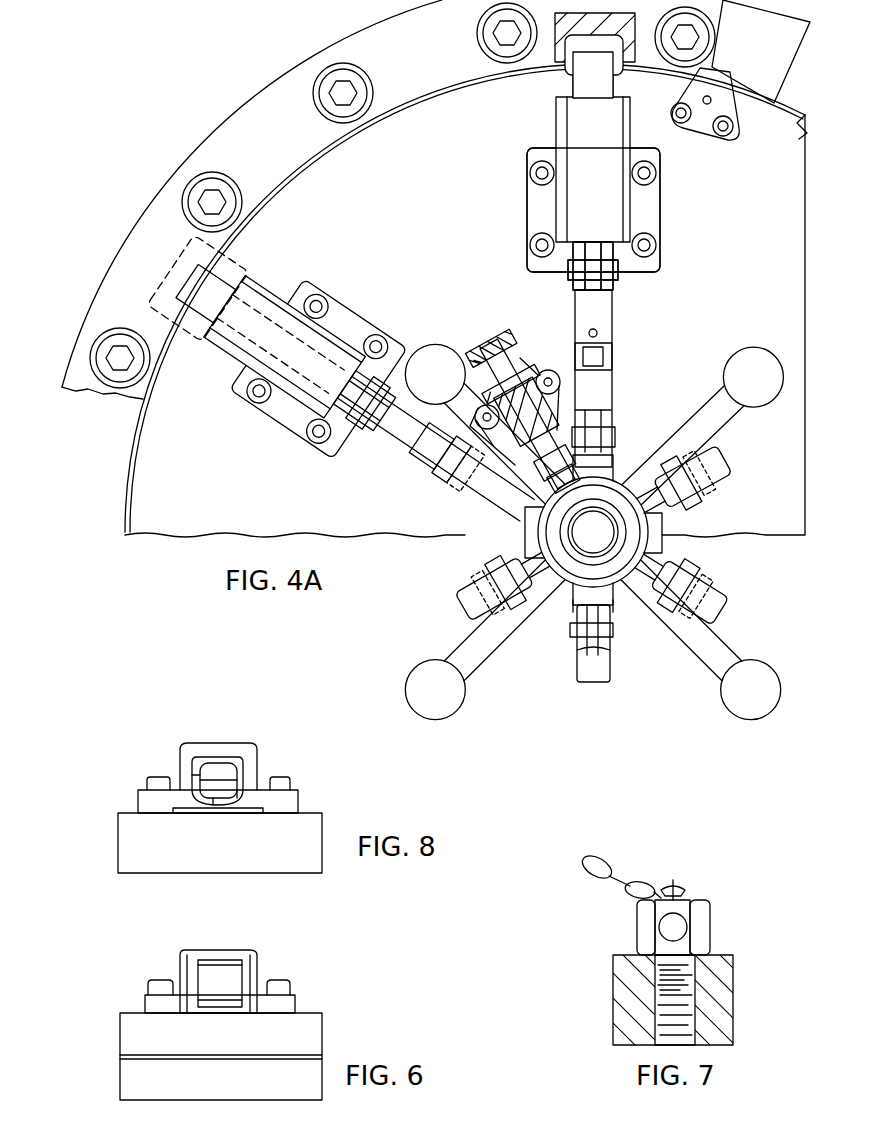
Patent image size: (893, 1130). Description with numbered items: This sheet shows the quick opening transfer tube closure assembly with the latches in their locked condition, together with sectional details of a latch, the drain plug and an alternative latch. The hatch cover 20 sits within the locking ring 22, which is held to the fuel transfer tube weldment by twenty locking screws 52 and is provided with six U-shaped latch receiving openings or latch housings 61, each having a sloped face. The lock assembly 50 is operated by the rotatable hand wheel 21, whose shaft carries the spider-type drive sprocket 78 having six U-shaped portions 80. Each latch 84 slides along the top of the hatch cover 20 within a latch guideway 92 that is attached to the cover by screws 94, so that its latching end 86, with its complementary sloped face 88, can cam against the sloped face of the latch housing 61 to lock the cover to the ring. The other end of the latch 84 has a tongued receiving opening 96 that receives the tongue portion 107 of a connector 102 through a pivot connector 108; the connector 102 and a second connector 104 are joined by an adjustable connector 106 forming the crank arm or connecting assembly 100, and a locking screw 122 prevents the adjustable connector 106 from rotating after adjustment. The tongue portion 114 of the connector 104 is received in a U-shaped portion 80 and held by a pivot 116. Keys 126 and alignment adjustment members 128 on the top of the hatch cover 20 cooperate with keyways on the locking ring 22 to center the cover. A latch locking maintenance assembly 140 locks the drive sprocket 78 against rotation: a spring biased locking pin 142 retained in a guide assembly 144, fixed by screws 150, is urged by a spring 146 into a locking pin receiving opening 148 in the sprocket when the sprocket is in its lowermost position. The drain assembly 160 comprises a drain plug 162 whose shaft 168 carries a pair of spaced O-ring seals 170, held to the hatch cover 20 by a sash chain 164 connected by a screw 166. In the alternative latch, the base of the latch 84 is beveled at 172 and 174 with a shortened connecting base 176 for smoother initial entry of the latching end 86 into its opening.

In FIG. 4A, the hatch cover 20 is at (799, 132).
In FIG. 8, the hatch cover 20 is at (220, 843).
In FIG. 6, the hatch cover 20 is at (129, 1013).
In FIG. 7, the hatch cover 20 is at (723, 964).
In FIG. 4A, the hand wheel 21 is at (760, 368).
In FIG. 4A, the locking ring 22 is at (296, 77).
In FIG. 4A, the lock assembly 50 is at (525, 553).
In FIG. 4A, the locking screws 52 is at (351, 88).
In FIG. 4A, the latch housing 61 is at (164, 277).
In FIG. 4A, the drive sprocket 78 is at (520, 528).
In FIG. 4A, the U-shaped portion 80 is at (582, 606).
In FIG. 4A, the latch 84 is at (585, 84).
In FIG. 6, the latch 84 is at (216, 983).
In FIG. 8, the latching end 86 is at (220, 782).
In FIG. 6, the latching end 86 is at (233, 989).
In FIG. 8, the sloped face 88 is at (210, 765).
In FIG. 6, the sloped face 88 is at (203, 968).
In FIG. 4A, the latch guideway 92 is at (567, 128).
In FIG. 8, the latch guideway 92 is at (250, 747).
In FIG. 6, the latch guideway 92 is at (180, 962).
In FIG. 4A, the screws 94 is at (650, 173).
In FIG. 8, the screws 94 is at (290, 776).
In FIG. 6, the screws 94 is at (288, 980).
In FIG. 4A, the tongued receiving opening 96 is at (612, 285).
In FIG. 4A, the connecting assembly 100 is at (707, 309).
In FIG. 4A, the connector 102 is at (405, 437).
In FIG. 4A, the connector 104 is at (465, 487).
In FIG. 4A, the adjustable connector 106 is at (440, 464).
In FIG. 4A, the tongue portion 107 is at (596, 283).
In FIG. 4A, the pivot connector 108 is at (620, 271).
In FIG. 4A, the tongue portion 114 is at (591, 658).
In FIG. 4A, the pivot 116 is at (613, 626).
In FIG. 4A, the locking screw 122 is at (447, 436).
In FIG. 4A, the keys 126 is at (719, 70).
In FIG. 4A, the alignment adjustment members 128 is at (713, 138).
In FIG. 4A, the latch locking maintenance assembly 140 is at (559, 362).
In FIG. 4A, the locking pin 142 is at (500, 338).
In FIG. 4A, the guide assembly 144 is at (511, 438).
In FIG. 4A, the spring 146 is at (553, 408).
In FIG. 4A, the locking pin receiving opening 148 is at (593, 465).
In FIG. 4A, the screws 150 is at (552, 370).
In FIG. 7, the drain assembly 160 is at (605, 940).
In FIG. 7, the drain plug 162 is at (708, 923).
In FIG. 7, the sash chain 164 is at (600, 859).
In FIG. 7, the screw 166 is at (679, 884).
In FIG. 7, the shaft 168 is at (665, 1003).
In FIG. 7, the O-ring seals 170 is at (668, 975).
In FIG. 8, the bevel 172 is at (190, 787).
In FIG. 8, the bevel 174 is at (237, 792).
In FIG. 8, the connecting base 176 is at (216, 797).